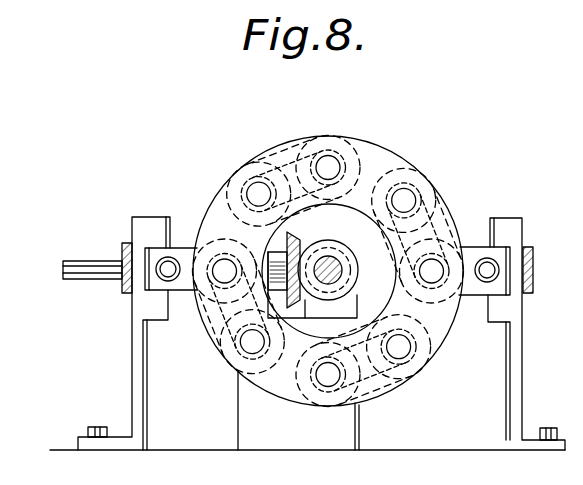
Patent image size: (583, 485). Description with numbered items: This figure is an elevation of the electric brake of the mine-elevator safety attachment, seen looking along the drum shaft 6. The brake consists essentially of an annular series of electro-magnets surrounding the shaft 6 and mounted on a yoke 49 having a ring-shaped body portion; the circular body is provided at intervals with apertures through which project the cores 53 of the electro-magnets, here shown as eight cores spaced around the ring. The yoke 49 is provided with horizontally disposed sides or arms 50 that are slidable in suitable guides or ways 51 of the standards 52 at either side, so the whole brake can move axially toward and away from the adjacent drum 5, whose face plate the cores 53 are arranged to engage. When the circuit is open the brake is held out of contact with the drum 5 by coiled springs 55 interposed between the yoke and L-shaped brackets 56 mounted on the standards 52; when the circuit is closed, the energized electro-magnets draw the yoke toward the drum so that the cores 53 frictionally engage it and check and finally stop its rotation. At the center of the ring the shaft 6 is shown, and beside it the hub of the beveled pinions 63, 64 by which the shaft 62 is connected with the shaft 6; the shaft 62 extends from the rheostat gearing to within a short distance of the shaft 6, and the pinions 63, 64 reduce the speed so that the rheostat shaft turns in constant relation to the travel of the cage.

The drum 5 is at (531, 334).
The shaft 6 is at (331, 261).
The yoke 49 is at (378, 156).
The sides or arms 50 is at (186, 292).
The guides or ways 51 is at (155, 248).
The standard 52 is at (140, 231).
The core 53 is at (258, 192).
The coiled spring 55 is at (157, 278).
The bracket 56 is at (120, 278).
The shaft 62 is at (88, 265).
The beveled pinion 63 is at (284, 237).
The beveled pinion 64 is at (340, 290).